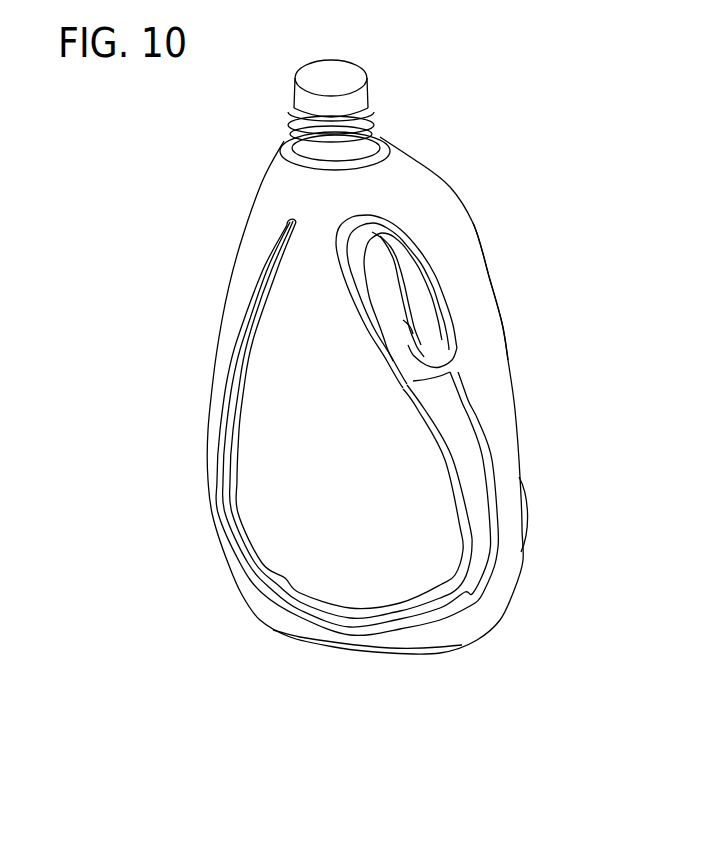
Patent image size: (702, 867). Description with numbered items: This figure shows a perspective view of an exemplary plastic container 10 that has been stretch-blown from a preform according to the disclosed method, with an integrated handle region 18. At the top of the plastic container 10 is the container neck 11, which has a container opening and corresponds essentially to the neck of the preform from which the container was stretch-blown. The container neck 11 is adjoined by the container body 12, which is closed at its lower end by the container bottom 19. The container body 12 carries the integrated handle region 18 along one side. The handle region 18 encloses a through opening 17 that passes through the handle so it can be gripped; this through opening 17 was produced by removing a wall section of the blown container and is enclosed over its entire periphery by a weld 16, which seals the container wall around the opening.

The plastic container 10 is at (158, 358).
The container neck 11 is at (362, 98).
The container body 12 is at (252, 493).
The weld 16 is at (430, 336).
The through opening 17 is at (414, 263).
The handle region 18 is at (467, 230).
The container bottom 19 is at (380, 653).